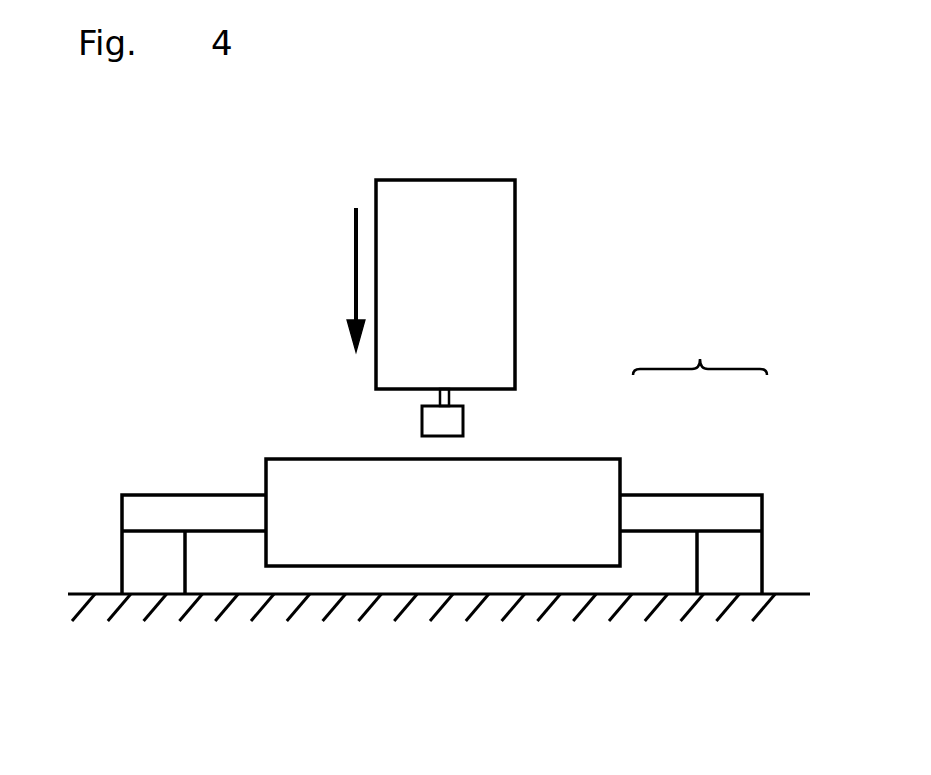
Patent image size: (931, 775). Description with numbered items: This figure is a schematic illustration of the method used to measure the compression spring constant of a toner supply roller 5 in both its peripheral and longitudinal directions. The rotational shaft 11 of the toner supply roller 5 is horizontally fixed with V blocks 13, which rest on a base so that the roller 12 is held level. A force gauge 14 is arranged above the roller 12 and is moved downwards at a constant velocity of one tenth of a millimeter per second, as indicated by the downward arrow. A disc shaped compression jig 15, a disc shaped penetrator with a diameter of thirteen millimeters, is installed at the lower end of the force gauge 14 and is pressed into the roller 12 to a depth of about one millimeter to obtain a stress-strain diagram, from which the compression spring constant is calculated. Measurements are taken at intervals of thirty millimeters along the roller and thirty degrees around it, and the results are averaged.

The toner supply roller 5 is at (700, 345).
The rotational shaft 11 is at (663, 510).
The roller 12 is at (597, 478).
The V blocks 13 is at (130, 572).
The force gauge 14 is at (443, 193).
The disc shaped compression jig 15 is at (437, 423).